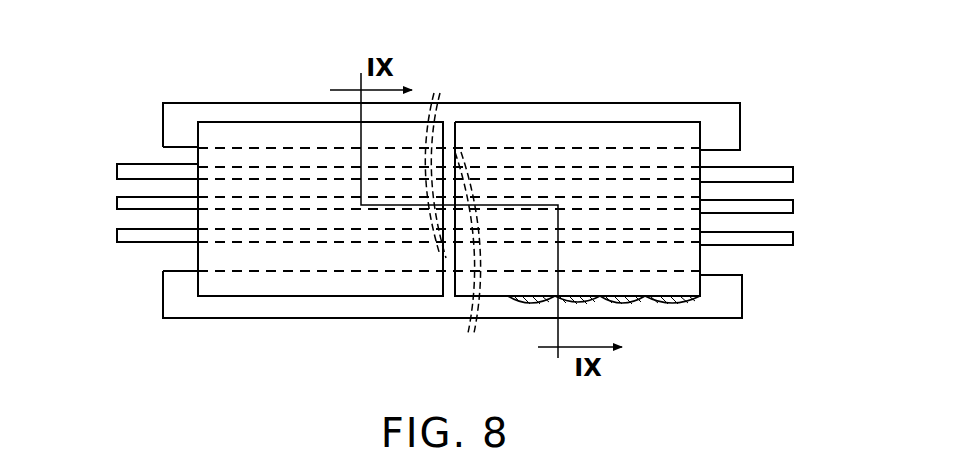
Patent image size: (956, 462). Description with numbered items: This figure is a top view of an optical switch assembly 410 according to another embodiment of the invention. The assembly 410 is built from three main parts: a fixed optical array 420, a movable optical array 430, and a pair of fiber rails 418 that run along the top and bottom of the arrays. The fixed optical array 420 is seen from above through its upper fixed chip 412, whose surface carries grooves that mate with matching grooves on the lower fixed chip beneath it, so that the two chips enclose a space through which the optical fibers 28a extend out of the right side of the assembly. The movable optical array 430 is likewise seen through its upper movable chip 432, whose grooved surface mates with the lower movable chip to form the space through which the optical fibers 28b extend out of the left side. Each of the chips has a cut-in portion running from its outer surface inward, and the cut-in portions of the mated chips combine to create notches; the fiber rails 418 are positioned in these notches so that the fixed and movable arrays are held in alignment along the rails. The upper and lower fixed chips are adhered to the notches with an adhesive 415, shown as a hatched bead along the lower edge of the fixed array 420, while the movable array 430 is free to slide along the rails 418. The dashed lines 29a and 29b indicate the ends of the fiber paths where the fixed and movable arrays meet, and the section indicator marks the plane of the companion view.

The optical switch assembly 410 is at (658, 64).
The fiber rails 418 is at (180, 113).
The fixed optical array 420 is at (685, 160).
The upper fixed chip 412 is at (698, 287).
The movable optical array 430 is at (265, 143).
The upper movable chip 432 is at (312, 287).
The adhesive 415 is at (672, 306).
The optical fibers 28a is at (783, 175).
The optical fibers 28b is at (128, 172).
The junction 29a is at (472, 255).
The junction 29b is at (445, 166).